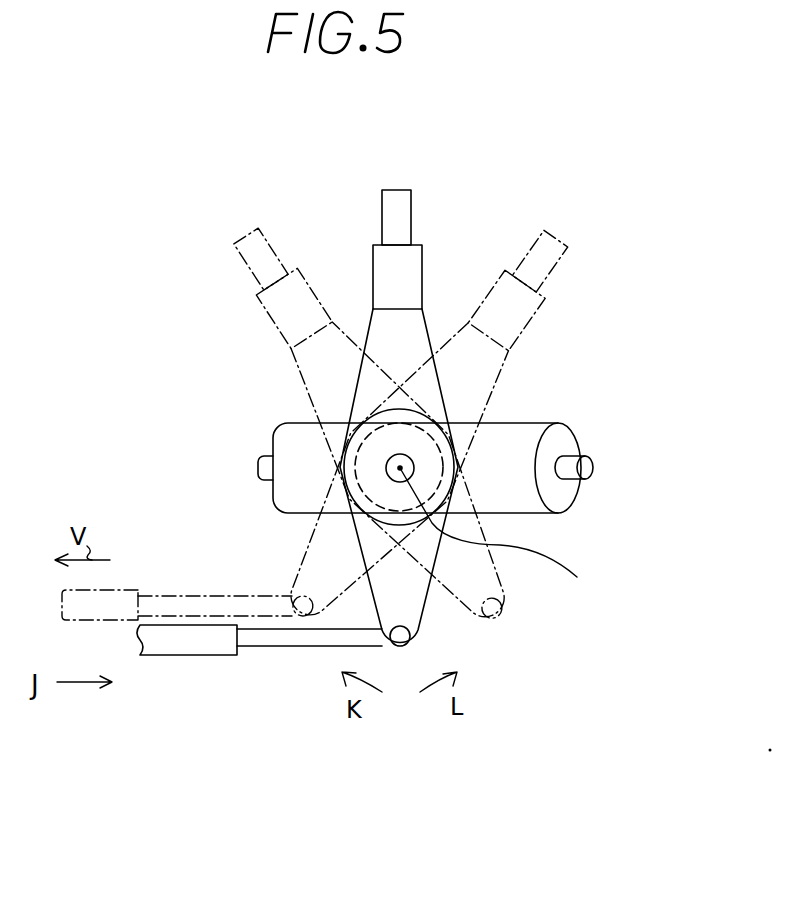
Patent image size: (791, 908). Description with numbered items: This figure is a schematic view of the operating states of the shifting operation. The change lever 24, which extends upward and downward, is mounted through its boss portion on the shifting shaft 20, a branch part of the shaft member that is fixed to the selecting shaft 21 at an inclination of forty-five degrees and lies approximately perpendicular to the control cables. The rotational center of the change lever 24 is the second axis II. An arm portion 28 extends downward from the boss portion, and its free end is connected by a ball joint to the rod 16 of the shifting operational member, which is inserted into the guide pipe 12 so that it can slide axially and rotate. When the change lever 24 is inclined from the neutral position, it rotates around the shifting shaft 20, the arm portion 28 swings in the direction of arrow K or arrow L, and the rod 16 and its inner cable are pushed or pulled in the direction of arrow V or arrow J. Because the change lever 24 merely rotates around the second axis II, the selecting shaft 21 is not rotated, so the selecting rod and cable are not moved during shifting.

The guide pipe 12 is at (188, 647).
The rod 16 is at (290, 648).
The shifting shaft 20 is at (345, 422).
The selecting shaft 21 is at (518, 430).
The change lever 24 is at (412, 333).
The arm portion 28 is at (400, 656).
The second axis II is at (581, 613).